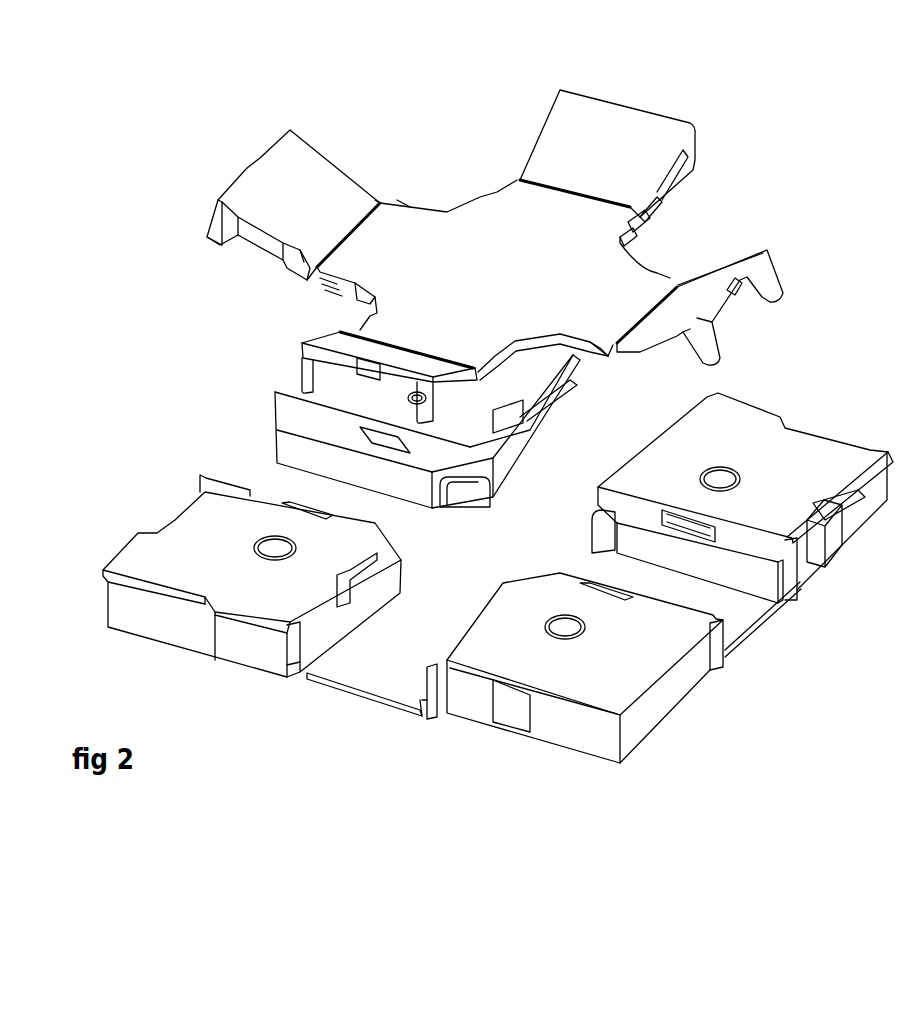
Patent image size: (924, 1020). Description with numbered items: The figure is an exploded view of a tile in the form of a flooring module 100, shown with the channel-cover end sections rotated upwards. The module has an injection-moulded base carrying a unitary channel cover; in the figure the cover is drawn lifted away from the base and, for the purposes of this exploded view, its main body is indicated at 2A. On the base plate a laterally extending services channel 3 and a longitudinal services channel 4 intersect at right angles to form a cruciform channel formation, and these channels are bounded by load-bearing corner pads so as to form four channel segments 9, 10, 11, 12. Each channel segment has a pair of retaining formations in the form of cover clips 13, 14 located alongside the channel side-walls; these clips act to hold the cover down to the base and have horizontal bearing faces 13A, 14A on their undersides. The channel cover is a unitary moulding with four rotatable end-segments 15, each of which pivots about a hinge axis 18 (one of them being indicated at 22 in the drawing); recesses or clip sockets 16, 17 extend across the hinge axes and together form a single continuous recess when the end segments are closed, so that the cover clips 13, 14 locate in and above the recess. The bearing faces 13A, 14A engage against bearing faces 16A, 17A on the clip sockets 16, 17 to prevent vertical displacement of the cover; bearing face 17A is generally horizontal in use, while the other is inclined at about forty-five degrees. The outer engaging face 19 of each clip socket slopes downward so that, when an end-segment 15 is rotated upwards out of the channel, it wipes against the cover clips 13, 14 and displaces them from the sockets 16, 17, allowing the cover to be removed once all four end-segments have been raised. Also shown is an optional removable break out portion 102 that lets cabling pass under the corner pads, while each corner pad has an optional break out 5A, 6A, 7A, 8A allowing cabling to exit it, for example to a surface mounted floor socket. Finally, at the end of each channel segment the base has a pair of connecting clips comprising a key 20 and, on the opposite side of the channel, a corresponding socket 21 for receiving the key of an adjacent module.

The flooring module 100 is at (725, 187).
The cover 2A is at (472, 256).
The laterally extending services channel 3 is at (576, 683).
The longitudinal services channel 4 is at (735, 617).
The break out 5A is at (415, 399).
The break out 6A is at (742, 498).
The break out 7A is at (565, 627).
The break out 8A is at (235, 603).
The channel segment 9 is at (326, 496).
The channel segment 10 is at (385, 441).
The channel segment 11 is at (664, 585).
The channel segment 12 is at (412, 613).
The cover clip 13 is at (303, 510).
The horizontal bearing face 13A is at (384, 621).
The cover clip 14 is at (378, 435).
The horizontal bearing face 14A is at (738, 578).
The rotatable end-segment 15 is at (271, 192).
The clip socket 16 is at (372, 188).
The bearing face 16A is at (667, 398).
The clip socket 17 is at (397, 201).
The bearing face 17A is at (597, 357).
The hinge axis 18 is at (343, 230).
The outer engaging face 19 is at (282, 270).
The key 20 is at (441, 719).
The socket 21 is at (286, 678).
The wing 22 is at (220, 220).
The break out portion 102 is at (467, 493).